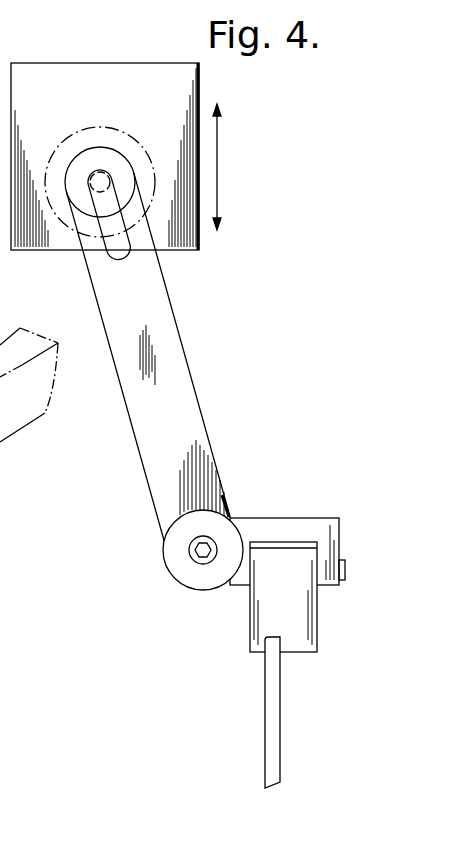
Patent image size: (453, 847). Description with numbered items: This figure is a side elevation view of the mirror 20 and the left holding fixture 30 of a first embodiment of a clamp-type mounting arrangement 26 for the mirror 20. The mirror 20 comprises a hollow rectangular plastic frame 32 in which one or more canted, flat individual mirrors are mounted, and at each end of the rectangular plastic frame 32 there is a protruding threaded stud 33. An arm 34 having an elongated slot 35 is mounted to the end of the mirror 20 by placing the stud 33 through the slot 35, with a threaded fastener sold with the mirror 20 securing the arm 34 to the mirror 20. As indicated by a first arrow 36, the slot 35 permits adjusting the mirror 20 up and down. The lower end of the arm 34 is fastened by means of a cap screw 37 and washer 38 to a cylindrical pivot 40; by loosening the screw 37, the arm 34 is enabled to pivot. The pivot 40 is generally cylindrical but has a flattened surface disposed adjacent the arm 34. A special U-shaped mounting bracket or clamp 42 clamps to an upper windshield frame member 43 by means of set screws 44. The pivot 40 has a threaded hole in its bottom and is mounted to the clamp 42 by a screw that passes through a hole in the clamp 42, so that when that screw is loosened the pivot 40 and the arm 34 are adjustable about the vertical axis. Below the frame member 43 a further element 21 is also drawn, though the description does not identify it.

The mirror 20 is at (47, 64).
The hollow rectangular plastic frame 32 is at (92, 95).
The protruding threaded stud 33 is at (106, 179).
The arm 34 is at (185, 355).
The elongated slot 35 is at (130, 260).
The first arrow 36 is at (217, 157).
The clamp-type mounting arrangement 26 is at (124, 485).
The left holding fixture 30 is at (138, 534).
The cap screw 37 is at (190, 556).
The washer 38 is at (200, 590).
The cylindrical pivot 40 is at (228, 500).
The U-shaped mounting bracket or clamp 42 is at (255, 518).
The upper windshield frame member 43 is at (256, 620).
The set screws 44 is at (344, 580).
The rod 21 is at (266, 678).